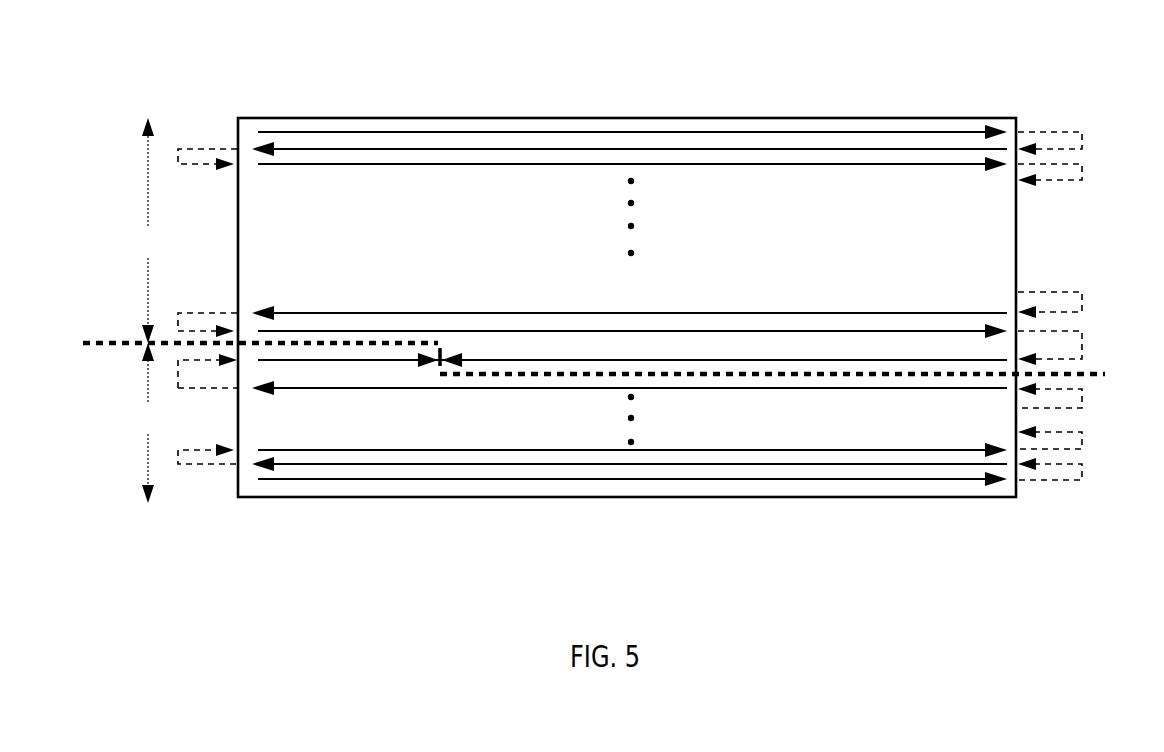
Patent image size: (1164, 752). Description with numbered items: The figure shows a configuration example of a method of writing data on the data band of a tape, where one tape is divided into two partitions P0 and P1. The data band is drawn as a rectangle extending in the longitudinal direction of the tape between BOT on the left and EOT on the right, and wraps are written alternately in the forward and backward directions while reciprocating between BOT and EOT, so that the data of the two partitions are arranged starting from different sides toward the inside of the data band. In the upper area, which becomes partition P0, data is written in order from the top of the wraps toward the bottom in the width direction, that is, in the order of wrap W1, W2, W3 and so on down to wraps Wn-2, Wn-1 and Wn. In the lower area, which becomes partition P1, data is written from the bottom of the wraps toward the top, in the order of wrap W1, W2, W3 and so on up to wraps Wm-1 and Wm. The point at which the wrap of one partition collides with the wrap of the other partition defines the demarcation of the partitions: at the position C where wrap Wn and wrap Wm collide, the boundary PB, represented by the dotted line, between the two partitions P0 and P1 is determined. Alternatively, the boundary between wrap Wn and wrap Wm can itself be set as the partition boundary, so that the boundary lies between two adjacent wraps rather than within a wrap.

The wrap W1 is at (572, 131).
The wrap W2 is at (658, 147).
The wrap W3 is at (722, 164).
The wrap Wn-2 is at (490, 313).
The wrap Wn-1 is at (590, 331).
The wrap Wn is at (670, 360).
The wrap Wm is at (390, 360).
The wrap Wm-1 is at (475, 388).
The boundary PB is at (354, 343).
The collision position C is at (440, 348).
The partition P0 is at (147, 230).
The partition P1 is at (147, 423).
The beginning of tape BOT is at (246, 86).
The end of tape EOT is at (1008, 86).